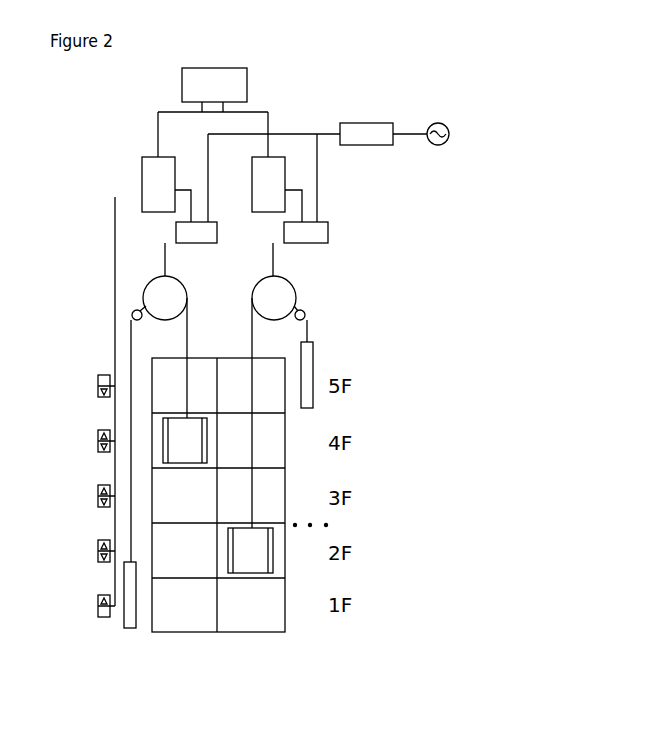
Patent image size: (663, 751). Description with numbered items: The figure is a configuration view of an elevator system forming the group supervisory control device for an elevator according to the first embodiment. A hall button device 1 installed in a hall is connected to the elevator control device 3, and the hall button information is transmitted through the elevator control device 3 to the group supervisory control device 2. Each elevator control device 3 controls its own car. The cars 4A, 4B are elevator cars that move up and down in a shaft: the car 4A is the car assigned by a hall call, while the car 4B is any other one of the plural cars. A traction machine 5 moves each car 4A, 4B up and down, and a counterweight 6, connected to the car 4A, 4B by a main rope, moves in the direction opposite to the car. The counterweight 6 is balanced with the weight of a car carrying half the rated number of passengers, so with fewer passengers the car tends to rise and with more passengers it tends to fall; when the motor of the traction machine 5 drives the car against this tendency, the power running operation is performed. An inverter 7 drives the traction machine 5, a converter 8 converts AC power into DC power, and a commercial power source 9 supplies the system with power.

The hall button device 1 is at (97, 498).
The group supervisory control device 2 is at (212, 68).
The elevator control device 3 is at (143, 175).
The car 4A is at (175, 417).
The car 4B is at (255, 568).
The traction machine 5 is at (150, 282).
The counterweight 6 is at (313, 357).
The inverter 7 is at (176, 231).
The converter 8 is at (372, 123).
The commercial power source 9 is at (447, 125).